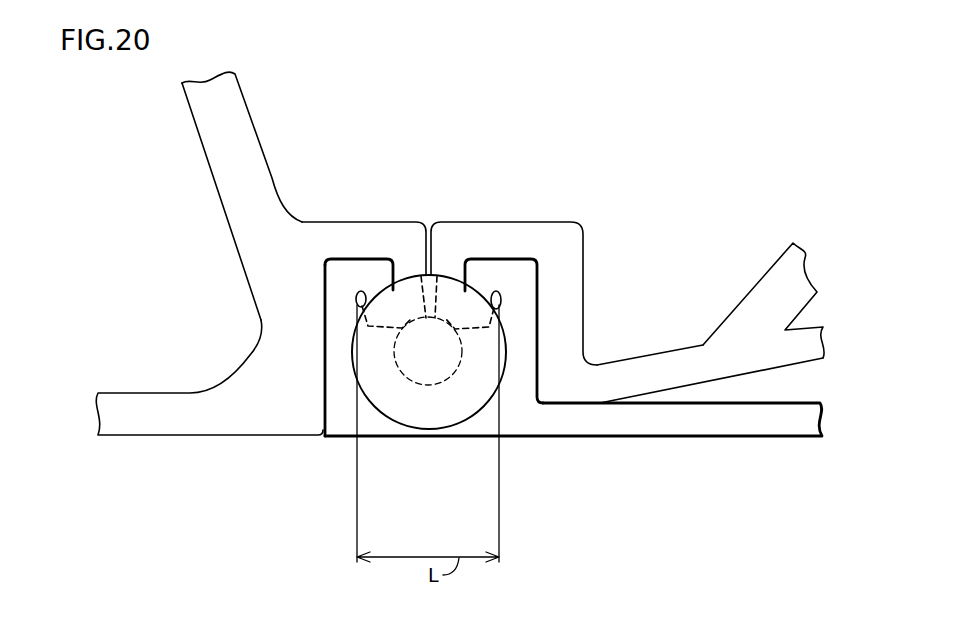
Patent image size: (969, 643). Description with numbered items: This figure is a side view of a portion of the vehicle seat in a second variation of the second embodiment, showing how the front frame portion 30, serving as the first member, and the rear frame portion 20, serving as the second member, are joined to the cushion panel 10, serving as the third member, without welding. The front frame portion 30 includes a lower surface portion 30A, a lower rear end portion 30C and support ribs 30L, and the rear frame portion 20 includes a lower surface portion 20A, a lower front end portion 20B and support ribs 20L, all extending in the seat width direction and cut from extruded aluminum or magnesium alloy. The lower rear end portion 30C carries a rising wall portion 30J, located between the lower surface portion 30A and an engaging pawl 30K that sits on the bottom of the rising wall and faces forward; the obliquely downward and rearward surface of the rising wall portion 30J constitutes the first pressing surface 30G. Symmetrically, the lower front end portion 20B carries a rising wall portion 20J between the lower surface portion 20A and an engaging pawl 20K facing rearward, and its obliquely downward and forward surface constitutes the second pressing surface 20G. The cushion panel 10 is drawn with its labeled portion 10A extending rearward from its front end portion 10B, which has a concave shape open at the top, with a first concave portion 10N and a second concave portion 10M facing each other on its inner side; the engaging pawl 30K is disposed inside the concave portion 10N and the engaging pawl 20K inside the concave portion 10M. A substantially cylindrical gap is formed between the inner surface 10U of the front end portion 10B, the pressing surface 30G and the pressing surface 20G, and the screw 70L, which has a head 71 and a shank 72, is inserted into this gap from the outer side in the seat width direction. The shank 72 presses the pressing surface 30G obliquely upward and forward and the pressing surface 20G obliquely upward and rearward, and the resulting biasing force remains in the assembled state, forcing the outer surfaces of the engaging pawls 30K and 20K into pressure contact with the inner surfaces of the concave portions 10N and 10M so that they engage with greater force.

The cushion panel 10 is at (545, 386).
The plate main portion 10A is at (703, 420).
The front end portion 10B is at (341, 451).
The concave portion 10N is at (358, 296).
The concave portion 10M is at (498, 295).
The inner surface 10U is at (405, 381).
The rear frame portion 20 is at (627, 278).
The lower surface portion 20A is at (660, 373).
The lower front end portion 20B is at (514, 259).
The pressing surface 20G is at (437, 276).
The rising wall portion 20J is at (452, 282).
The engaging pawl 20K is at (494, 291).
The support rib 20L is at (771, 304).
The front frame portion 30 is at (261, 293).
The lower surface portion 30A is at (127, 418).
The lower rear end portion 30C is at (362, 241).
The pressing surface 30G is at (407, 250).
The rising wall portion 30J is at (410, 280).
The engaging pawl 30K is at (365, 291).
The support rib 30L is at (238, 158).
The screw 70L is at (429, 408).
The head 71 is at (481, 413).
The shank 72 is at (447, 386).